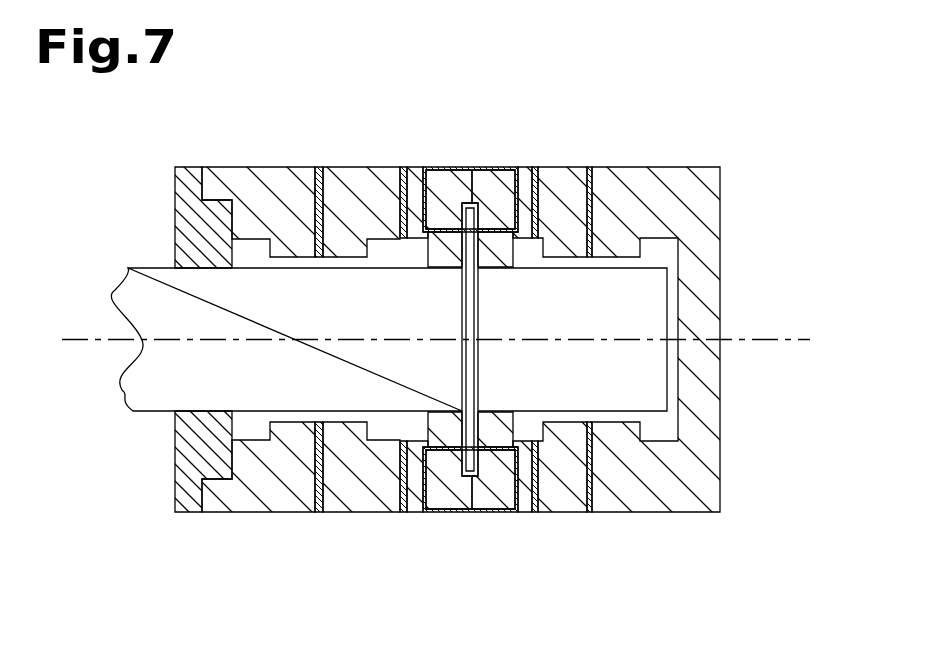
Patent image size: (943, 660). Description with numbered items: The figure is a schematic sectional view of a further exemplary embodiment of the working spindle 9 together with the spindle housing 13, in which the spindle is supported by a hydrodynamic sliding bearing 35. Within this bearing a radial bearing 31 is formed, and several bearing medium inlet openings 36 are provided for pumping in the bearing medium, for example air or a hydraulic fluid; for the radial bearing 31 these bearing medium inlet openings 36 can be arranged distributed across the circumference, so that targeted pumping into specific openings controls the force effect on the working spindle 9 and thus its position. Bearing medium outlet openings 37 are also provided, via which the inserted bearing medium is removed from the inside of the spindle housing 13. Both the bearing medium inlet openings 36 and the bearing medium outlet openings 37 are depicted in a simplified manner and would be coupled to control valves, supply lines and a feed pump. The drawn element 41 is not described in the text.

The working spindle 9 is at (194, 290).
The spindle housing 13 is at (480, 177).
The radial bearing 31 is at (291, 459).
The hydrodynamic sliding bearing 35 is at (338, 500).
The bearing medium inlet opening 36 is at (322, 167).
The bearing medium outlet opening 37 is at (403, 167).
The disc 41 is at (481, 474).